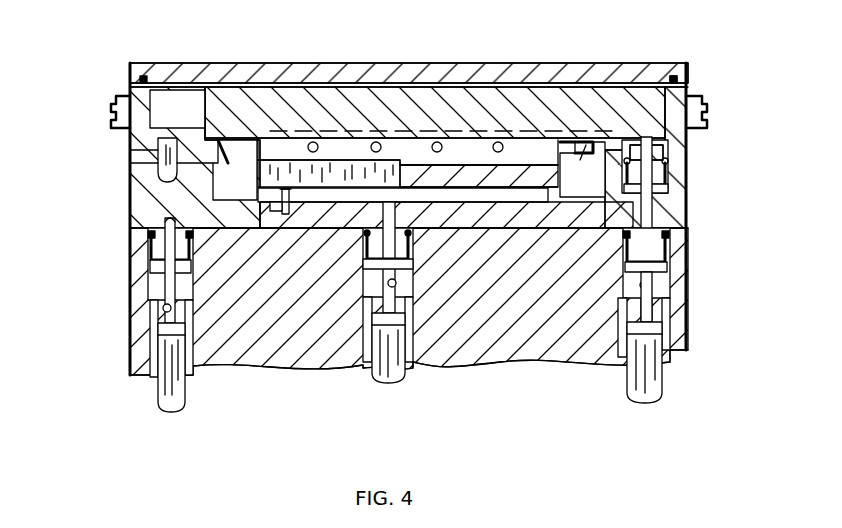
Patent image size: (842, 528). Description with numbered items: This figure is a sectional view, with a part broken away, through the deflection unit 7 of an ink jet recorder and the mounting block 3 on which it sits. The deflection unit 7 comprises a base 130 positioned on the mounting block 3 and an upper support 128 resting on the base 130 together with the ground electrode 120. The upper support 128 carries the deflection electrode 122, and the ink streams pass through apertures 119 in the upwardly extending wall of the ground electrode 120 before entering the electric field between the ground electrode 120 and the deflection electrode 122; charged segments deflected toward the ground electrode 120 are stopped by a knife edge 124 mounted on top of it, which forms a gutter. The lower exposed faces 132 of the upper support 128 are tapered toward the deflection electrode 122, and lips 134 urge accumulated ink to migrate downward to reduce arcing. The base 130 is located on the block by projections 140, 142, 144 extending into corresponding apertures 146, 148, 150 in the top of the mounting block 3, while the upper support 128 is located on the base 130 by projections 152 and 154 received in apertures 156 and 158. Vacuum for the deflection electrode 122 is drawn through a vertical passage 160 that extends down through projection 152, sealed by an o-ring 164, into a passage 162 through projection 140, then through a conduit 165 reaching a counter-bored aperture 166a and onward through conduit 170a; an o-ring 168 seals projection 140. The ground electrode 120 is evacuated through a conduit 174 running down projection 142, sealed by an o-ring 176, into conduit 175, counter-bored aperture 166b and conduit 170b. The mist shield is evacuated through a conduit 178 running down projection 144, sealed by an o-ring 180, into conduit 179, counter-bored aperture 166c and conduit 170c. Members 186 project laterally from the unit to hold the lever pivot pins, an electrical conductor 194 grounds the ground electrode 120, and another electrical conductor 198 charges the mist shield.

The mounting block 3 is at (690, 295).
The deflection unit 7 is at (165, 62).
The apertures 119 is at (376, 141).
The ground electrode 120 is at (515, 185).
The deflection electrode 122 is at (612, 95).
The knife edge 124 is at (287, 157).
The upper support 128 is at (145, 100).
The base 130 is at (130, 206).
The lower exposed faces 132 is at (423, 130).
The lips 134 is at (409, 170).
The projection 140 is at (622, 248).
The projection 142 is at (372, 258).
The projection 144 is at (153, 266).
The aperture 146 is at (626, 271).
The aperture 148 is at (368, 292).
The aperture 150 is at (150, 290).
The projection 152 is at (690, 183).
The projection 154 is at (130, 152).
The aperture 156 is at (686, 196).
The aperture 158 is at (135, 172).
The vertical passage 160 is at (665, 146).
The passage 162 is at (690, 228).
The o-ring 164 is at (672, 166).
The conduit 165 is at (630, 291).
The counter-bored aperture 166a is at (762, 318).
The counter-bored aperture 166b is at (366, 358).
The counter-bored aperture 166c is at (263, 394).
The o-ring 168 is at (690, 255).
The conduit 170a is at (738, 402).
The conduit 170b is at (478, 397).
The conduit 170c is at (185, 395).
The conduit 174 is at (380, 216).
The conduit 175 is at (399, 289).
The o-ring 176 is at (417, 238).
The conduit 178 is at (142, 231).
The conduit 179 is at (162, 312).
The o-ring 180 is at (145, 240).
The members 186 is at (112, 112).
The electrical conductor 194 is at (262, 236).
The electrical conductor 198 is at (690, 84).